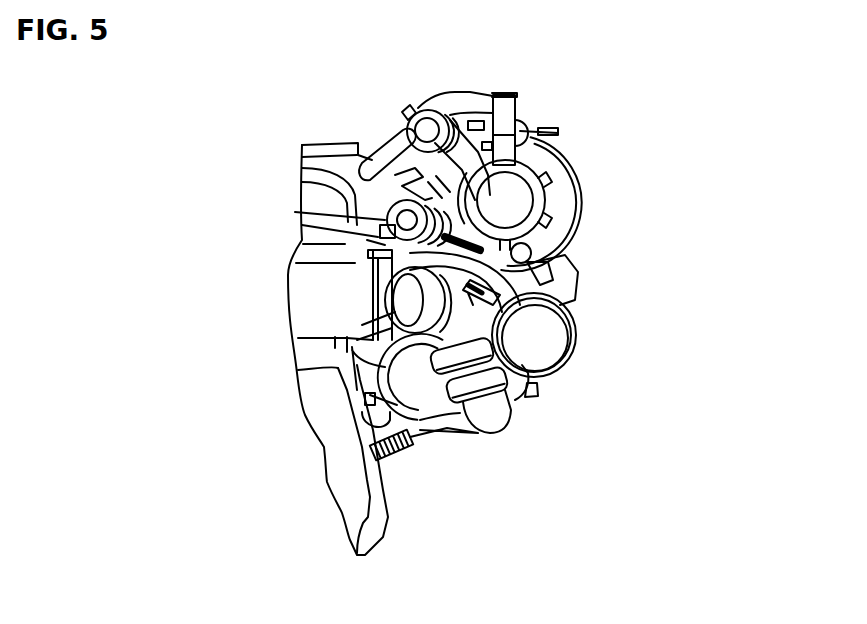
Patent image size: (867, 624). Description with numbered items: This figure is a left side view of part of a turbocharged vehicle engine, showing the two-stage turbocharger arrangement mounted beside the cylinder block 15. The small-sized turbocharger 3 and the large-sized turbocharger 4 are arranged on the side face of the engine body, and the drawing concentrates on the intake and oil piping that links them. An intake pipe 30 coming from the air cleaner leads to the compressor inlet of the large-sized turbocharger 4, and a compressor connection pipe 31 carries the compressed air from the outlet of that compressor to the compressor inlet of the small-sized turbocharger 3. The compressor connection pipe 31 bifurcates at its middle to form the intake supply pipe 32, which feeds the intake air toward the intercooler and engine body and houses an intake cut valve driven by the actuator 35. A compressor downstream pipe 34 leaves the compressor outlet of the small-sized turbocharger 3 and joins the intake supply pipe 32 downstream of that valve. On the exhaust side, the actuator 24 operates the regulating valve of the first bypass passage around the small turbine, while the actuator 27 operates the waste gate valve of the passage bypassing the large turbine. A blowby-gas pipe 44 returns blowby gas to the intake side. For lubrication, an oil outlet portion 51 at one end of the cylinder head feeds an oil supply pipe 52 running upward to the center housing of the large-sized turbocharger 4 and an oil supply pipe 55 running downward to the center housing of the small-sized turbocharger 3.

The small-sized turbocharger 3 is at (443, 425).
The large-sized turbocharger 4 is at (576, 160).
The cylinder block 15 is at (388, 538).
The actuator 24 is at (548, 360).
The actuator 27 is at (428, 108).
The intake pipe 30 is at (545, 205).
The compressor connection pipe 31 is at (560, 265).
The intake supply pipe 32 is at (386, 326).
The compressor downstream pipe 34 is at (493, 420).
The actuator 35 is at (380, 226).
The blowby-gas pipe 44 is at (470, 93).
The oil outlet portion 51 is at (376, 250).
The oil supply pipe 52 is at (405, 155).
The oil supply pipe 55 is at (382, 283).